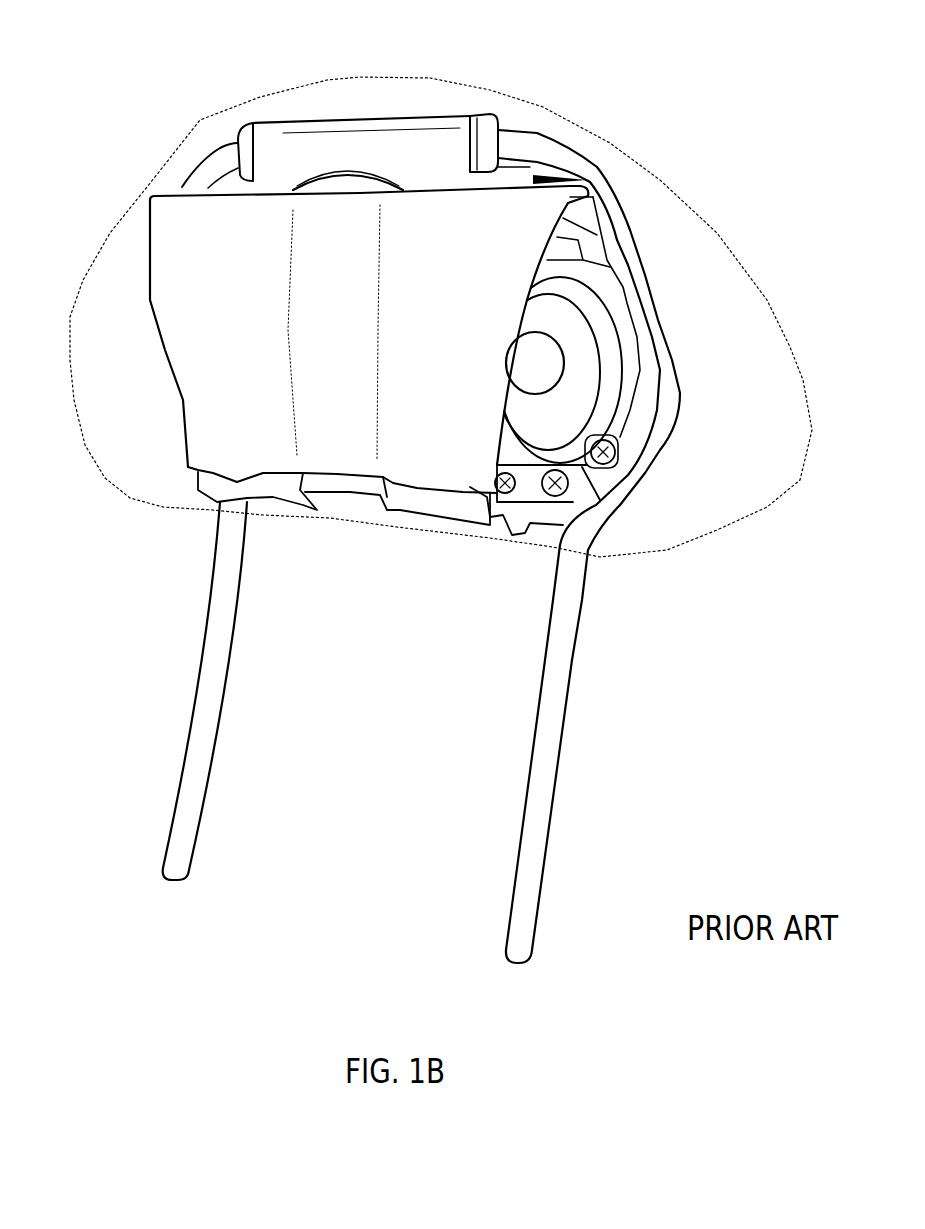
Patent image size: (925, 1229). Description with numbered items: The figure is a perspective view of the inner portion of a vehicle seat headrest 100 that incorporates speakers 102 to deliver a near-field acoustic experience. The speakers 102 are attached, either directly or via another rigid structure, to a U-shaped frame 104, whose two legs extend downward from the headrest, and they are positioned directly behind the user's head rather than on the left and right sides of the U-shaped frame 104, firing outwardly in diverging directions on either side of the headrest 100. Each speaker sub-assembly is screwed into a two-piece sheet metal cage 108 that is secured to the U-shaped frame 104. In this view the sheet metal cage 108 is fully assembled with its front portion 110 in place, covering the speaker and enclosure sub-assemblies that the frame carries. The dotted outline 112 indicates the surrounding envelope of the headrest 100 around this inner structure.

The headrest 100 is at (93, 134).
The speaker 102 is at (597, 373).
The U-shaped frame 104 is at (190, 632).
The sheet metal cage 108 is at (333, 135).
The front portion 110 is at (193, 378).
The headrest outline 112 is at (670, 176).